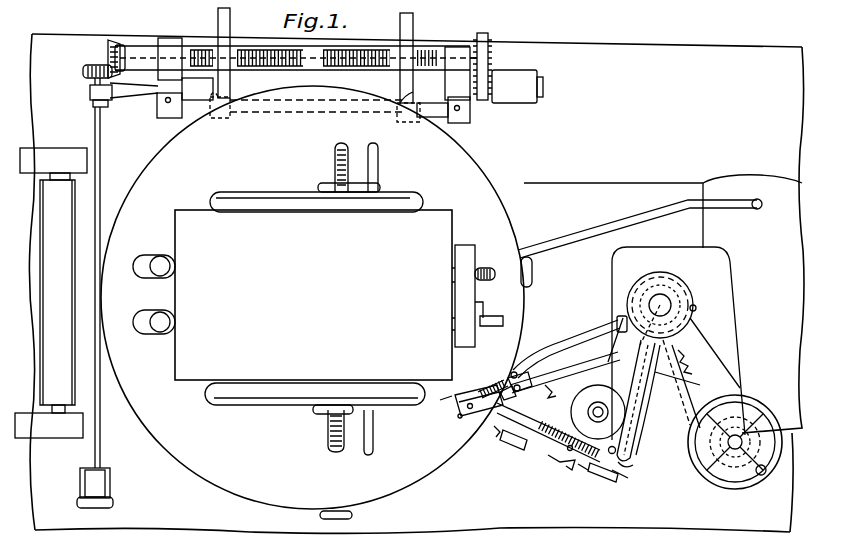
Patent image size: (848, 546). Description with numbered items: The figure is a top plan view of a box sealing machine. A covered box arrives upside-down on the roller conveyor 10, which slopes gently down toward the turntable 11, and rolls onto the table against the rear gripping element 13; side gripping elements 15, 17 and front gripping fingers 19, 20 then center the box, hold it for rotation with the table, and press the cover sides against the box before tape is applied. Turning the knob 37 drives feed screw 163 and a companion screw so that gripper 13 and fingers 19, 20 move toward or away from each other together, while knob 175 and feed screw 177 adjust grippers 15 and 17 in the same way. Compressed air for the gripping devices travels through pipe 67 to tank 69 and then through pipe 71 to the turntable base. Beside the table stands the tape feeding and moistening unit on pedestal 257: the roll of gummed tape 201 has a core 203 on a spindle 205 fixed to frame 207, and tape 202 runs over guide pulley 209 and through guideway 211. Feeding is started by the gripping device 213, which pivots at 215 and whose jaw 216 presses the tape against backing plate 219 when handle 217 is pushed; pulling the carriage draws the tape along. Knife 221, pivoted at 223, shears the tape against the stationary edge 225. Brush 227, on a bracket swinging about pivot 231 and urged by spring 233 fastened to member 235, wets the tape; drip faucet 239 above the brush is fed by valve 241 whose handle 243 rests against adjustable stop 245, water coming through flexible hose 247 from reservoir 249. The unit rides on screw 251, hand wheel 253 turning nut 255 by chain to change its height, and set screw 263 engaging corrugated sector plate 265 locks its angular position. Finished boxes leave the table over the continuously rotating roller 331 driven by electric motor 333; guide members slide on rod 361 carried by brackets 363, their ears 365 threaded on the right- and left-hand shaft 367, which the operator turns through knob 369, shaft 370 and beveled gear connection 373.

The roller conveyor 10 is at (54, 451).
The turntable 11 is at (236, 509).
The rear gripping element 13 is at (464, 258).
The side gripping element 15 is at (262, 396).
The side gripping element 17 is at (272, 199).
The front gripping finger 19 is at (159, 262).
The front gripping finger 20 is at (160, 328).
The knob 37 is at (533, 270).
The pipe 67 is at (538, 352).
The tank 69 is at (740, 182).
The pipe 71 is at (608, 224).
The feed screw 163 is at (487, 268).
The knob 175 is at (352, 515).
The feed screw 177 is at (334, 167).
The roll of gummed tape 201 is at (648, 458).
The tape 202 is at (618, 451).
The core 203 is at (636, 430).
The spindle 205 is at (600, 405).
The frame 207 is at (660, 376).
The guide pulley 209 is at (626, 466).
The guideway 211 is at (626, 476).
The gripping device 213 is at (588, 472).
The pivot 215 is at (605, 480).
The gripping jaw 216 is at (568, 452).
The handle 217 is at (565, 470).
The backing plate 219 is at (604, 418).
The knife 221 is at (505, 443).
The pivot 223 is at (496, 432).
The stationary shearing edge 225 is at (475, 410).
The brush 227 is at (488, 392).
The pivot 231 is at (452, 397).
The spring 233 is at (548, 429).
The bracket member 235 is at (525, 420).
The drip faucet 239 is at (500, 390).
The valve 241 is at (512, 378).
The valve handle 243 is at (560, 372).
The adjustable stop 245 is at (552, 392).
The flexible hose 247 is at (597, 330).
The reservoir 249 is at (646, 282).
The screw 251 is at (694, 306).
The hand wheel 253 is at (752, 488).
The nut 255 is at (675, 300).
The pedestal 257 is at (733, 334).
The set screw 263 is at (676, 400).
The corrugated plate 265 is at (690, 356).
The roller 331 is at (352, 48).
The electric motor 333 is at (515, 100).
The rod 361 is at (195, 102).
The brackets 363 is at (170, 62).
The ears 365 is at (232, 40).
The shaft 367 is at (272, 88).
The knob 369 is at (104, 506).
The shaft 370 is at (101, 162).
The beveled gear connection 373 is at (95, 52).